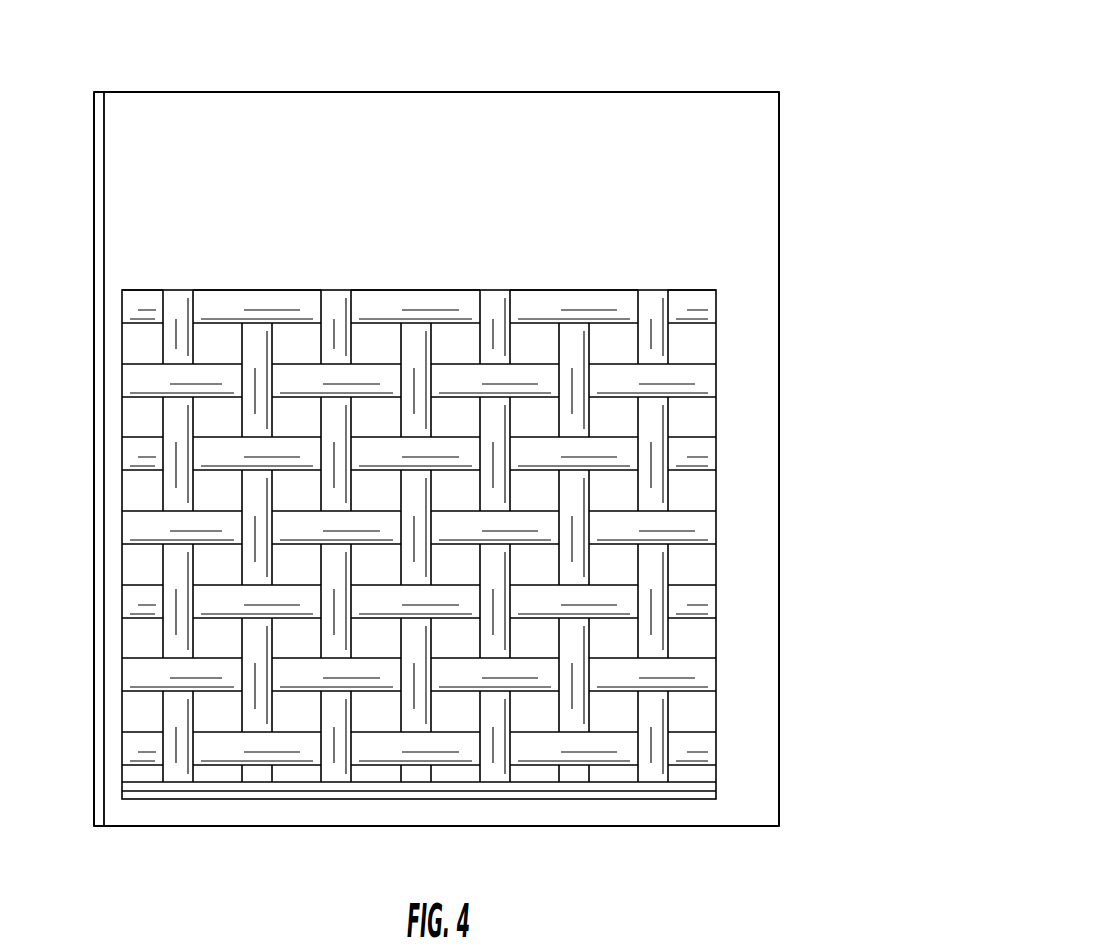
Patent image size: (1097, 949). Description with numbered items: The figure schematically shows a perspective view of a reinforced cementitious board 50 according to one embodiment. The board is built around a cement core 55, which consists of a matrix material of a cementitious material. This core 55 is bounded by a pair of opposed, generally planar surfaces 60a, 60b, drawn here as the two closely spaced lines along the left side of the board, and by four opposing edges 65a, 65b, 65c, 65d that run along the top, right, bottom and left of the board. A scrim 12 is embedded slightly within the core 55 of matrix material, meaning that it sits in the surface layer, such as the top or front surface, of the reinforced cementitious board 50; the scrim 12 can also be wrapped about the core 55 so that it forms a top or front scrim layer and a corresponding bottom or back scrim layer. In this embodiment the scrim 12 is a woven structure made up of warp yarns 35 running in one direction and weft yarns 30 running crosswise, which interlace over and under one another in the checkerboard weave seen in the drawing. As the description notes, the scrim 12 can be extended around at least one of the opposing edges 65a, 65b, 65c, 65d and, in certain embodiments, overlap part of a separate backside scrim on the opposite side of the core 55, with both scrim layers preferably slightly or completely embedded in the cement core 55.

The reinforced cementitious board 50 is at (829, 100).
The cement core 55 is at (545, 172).
The planar surface 60a is at (107, 138).
The planar surface 60b is at (95, 110).
The edge 65a is at (340, 92).
The edge 65b is at (779, 237).
The edge 65c is at (673, 826).
The edge 65d is at (98, 787).
The scrim 12 is at (660, 352).
The weft yarns 30 is at (655, 497).
The warp yarns 35 is at (697, 675).